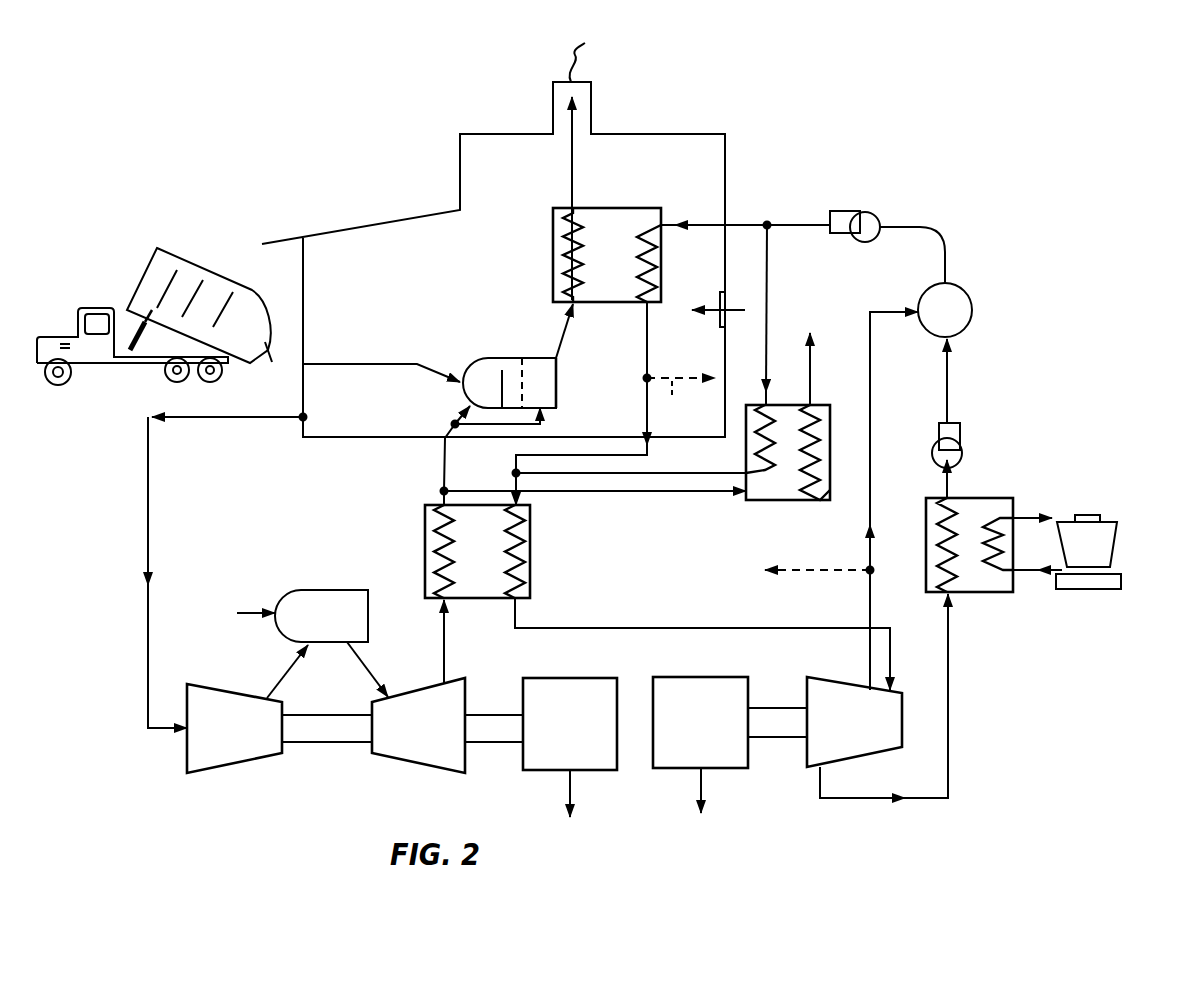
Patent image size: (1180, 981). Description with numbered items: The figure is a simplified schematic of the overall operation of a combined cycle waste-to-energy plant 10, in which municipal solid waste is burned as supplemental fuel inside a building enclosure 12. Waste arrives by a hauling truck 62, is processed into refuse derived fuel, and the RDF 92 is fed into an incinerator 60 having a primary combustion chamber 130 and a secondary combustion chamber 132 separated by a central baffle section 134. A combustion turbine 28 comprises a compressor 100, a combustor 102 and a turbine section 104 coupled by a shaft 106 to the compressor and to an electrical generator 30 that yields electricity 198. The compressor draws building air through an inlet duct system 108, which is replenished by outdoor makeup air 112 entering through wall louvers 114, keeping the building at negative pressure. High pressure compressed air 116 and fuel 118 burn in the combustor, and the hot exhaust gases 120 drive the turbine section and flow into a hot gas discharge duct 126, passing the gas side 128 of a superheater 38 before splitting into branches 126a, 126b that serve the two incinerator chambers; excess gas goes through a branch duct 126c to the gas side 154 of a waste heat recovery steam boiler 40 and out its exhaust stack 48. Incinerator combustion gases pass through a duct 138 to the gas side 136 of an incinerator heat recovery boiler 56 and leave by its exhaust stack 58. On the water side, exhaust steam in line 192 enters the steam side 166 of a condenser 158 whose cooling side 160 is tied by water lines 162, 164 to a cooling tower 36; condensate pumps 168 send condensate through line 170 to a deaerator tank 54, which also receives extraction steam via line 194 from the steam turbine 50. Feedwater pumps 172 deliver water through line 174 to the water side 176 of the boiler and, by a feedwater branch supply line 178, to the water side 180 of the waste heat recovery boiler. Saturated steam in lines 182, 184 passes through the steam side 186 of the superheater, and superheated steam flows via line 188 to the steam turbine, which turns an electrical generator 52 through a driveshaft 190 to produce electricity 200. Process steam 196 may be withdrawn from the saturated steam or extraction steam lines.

The combined cycle waste-to-energy plant 10 is at (788, 120).
The building enclosure 12 is at (731, 170).
The combustion turbine 28 is at (333, 752).
The electrical generator 30 is at (580, 736).
The cooling tower 36 is at (1117, 543).
The superheater 38 is at (492, 559).
The waste heat recovery steam boiler 40 is at (783, 500).
The exhaust stack 48 is at (812, 372).
The steam turbine 50 is at (861, 736).
The electrical generator 52 is at (713, 736).
The deaerator tank 54 is at (972, 315).
The incinerator heat recovery boiler 56 is at (627, 207).
The exhaust stack 58 is at (568, 178).
The incinerator 60 is at (510, 356).
The waste hauling truck 62 is at (77, 318).
The RDF 92 is at (393, 362).
The compressor 100 is at (244, 741).
The combustor 102 is at (336, 626).
The turbine section 104 is at (434, 739).
The shaft 106 is at (347, 712).
The inlet duct system 108 is at (150, 548).
The outdoor makeup air 112 is at (716, 306).
The wall louvers 114 is at (728, 300).
The high pressure compressed air 116 is at (280, 670).
The fuel 118 is at (246, 611).
The hot exhaust gases 120 is at (383, 660).
The hot gas discharge duct 126 is at (444, 468).
The duct branch 126a is at (467, 410).
The duct branch 126b is at (541, 427).
The branch duct 126c is at (572, 494).
The superheater gas side 128 is at (438, 546).
The primary combustion chamber 130 is at (478, 374).
The secondary combustion chamber 132 is at (546, 385).
The central baffle section 134 is at (514, 376).
The boiler gas side 136 is at (562, 246).
The duct 138 is at (576, 328).
The boiler gas side 154 is at (824, 448).
The condenser 158 is at (1010, 495).
The condenser cooling side 160 is at (1006, 545).
The water line 162 is at (1018, 512).
The water line 164 is at (1053, 575).
The condenser steam side 166 is at (940, 540).
The condensate pump 168 is at (960, 447).
The line 170 is at (948, 393).
The feedwater pump 172 is at (868, 210).
The line 174 is at (760, 224).
The boiler water side 176 is at (637, 262).
The feedwater branch supply line 178 is at (765, 322).
The boiler water side 180 is at (758, 446).
The saturated steam line 182 is at (678, 474).
The saturated steam line 184 is at (648, 352).
The superheater steam side 186 is at (522, 551).
The line 188 is at (648, 627).
The driveshaft 190 is at (777, 707).
The exhaust steam line 192 is at (950, 737).
The extraction steam line 194 is at (873, 410).
The process steam 196 is at (672, 395).
The electricity 198 is at (572, 790).
The electricity 200 is at (705, 787).